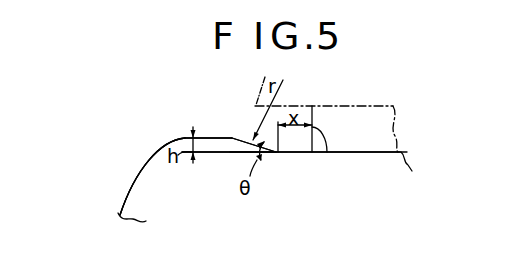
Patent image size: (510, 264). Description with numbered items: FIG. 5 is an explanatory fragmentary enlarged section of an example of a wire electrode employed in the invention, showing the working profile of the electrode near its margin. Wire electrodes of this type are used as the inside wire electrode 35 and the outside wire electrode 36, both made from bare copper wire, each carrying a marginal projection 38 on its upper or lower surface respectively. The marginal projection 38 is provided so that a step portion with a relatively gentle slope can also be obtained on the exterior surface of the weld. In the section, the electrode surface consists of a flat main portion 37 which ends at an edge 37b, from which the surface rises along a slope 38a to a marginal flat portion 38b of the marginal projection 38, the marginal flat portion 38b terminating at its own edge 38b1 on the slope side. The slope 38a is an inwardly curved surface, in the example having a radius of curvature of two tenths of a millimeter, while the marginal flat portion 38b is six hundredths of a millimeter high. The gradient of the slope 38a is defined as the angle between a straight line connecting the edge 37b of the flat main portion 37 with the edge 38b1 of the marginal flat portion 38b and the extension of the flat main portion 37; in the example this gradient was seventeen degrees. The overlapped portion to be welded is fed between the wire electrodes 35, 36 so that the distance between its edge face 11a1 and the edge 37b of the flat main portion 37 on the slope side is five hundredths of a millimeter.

The inside wire electrode 35 is at (142, 202).
The outside wire electrode 36 is at (121, 177).
The flat main portion 37 is at (365, 153).
The edge of the flat main portion 37b is at (279, 154).
The marginal projection 38 is at (198, 128).
The slope 38a is at (247, 153).
The marginal flat portion 38b is at (203, 136).
The edge of the marginal flat portion 38b1 is at (252, 142).
The edge face 11a1 is at (316, 153).